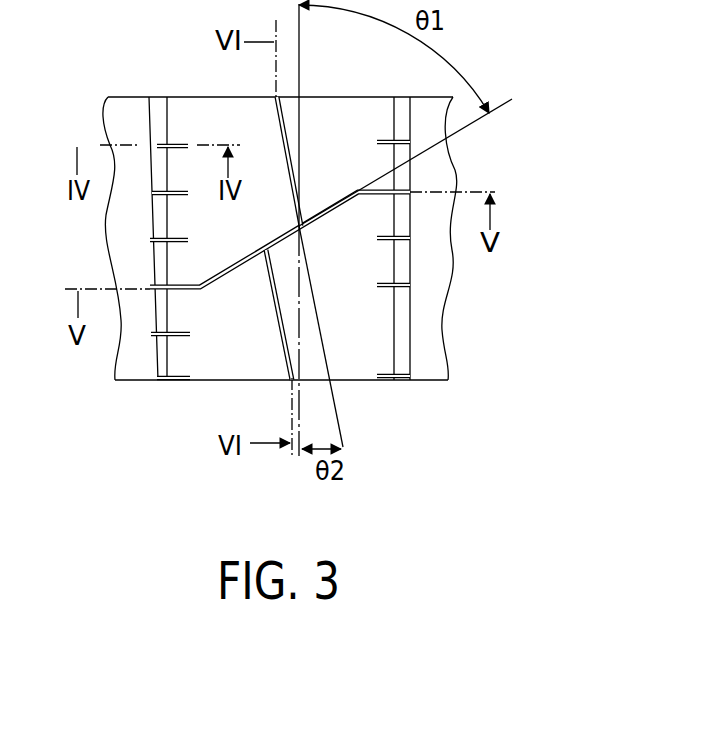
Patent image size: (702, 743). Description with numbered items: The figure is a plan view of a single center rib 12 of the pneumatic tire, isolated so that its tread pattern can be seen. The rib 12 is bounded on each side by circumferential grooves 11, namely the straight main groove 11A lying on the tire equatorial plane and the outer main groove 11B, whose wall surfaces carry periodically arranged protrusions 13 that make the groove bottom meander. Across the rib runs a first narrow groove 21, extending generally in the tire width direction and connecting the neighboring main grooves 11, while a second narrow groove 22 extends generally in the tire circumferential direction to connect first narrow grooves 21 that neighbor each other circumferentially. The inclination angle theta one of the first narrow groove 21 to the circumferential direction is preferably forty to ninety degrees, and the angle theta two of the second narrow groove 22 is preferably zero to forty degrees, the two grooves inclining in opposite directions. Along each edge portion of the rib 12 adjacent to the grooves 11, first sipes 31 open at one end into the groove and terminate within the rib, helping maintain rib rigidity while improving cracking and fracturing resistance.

The circumferential groove 11 is at (332, 293).
The main groove 11A is at (430, 350).
The main groove 11B is at (138, 372).
The rib 12 is at (310, 268).
The protrusion 13 is at (142, 292).
The first narrow groove 21 is at (338, 200).
The second narrow groove 22 is at (299, 130).
The first sipe 31 is at (150, 242).